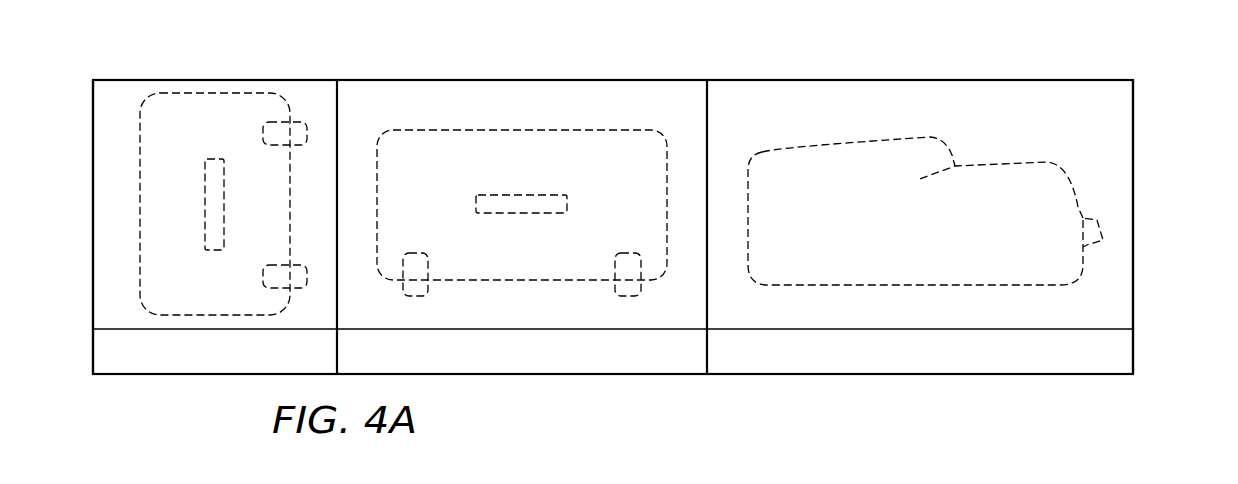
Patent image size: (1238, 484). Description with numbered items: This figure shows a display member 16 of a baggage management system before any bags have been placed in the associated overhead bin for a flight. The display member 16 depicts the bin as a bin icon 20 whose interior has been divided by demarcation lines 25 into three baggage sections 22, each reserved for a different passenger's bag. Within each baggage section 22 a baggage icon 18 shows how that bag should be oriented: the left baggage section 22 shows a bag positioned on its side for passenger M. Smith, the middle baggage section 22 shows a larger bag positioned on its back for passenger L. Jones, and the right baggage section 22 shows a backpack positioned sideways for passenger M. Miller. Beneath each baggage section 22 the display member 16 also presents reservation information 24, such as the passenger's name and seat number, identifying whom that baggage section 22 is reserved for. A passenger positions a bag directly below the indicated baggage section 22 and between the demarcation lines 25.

The display member 16 is at (1178, 108).
The baggage icon 18 is at (258, 108).
The bin icon 20 is at (1133, 147).
The baggage section 22 is at (313, 98).
The reservation information 24 is at (207, 366).
The demarcation line 25 is at (93, 193).